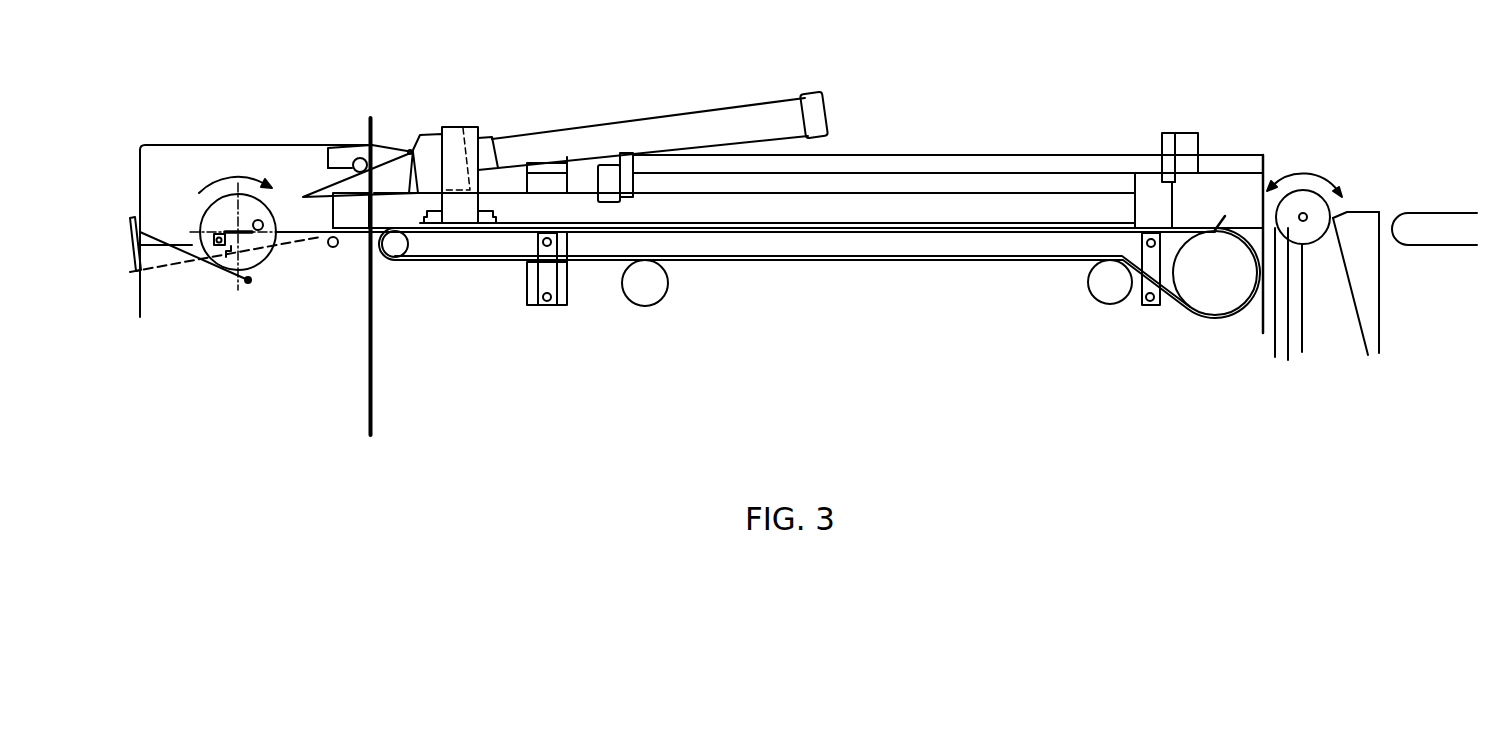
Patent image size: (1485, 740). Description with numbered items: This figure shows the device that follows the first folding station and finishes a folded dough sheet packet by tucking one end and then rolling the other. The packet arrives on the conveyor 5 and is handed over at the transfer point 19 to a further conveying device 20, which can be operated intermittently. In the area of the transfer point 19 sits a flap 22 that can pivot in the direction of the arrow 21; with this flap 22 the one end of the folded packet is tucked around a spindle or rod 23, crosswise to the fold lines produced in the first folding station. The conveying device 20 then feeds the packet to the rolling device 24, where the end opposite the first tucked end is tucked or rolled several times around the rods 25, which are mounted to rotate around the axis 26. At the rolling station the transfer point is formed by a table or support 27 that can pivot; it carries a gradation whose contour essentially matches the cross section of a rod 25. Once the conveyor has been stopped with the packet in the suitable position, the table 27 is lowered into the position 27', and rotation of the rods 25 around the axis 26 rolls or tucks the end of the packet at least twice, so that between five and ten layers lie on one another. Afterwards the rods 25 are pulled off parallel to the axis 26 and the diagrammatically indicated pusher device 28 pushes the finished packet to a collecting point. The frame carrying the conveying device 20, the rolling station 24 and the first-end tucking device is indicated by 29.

The conveyor 5 is at (1428, 226).
The transfer point 19 is at (1360, 186).
The conveying device 20 is at (1259, 292).
The arrow 21 is at (1302, 173).
The flap 22 is at (1368, 355).
The spindle or rod 23 is at (1305, 222).
The rolling device 24 is at (258, 138).
The rods 25 is at (217, 234).
The axis 26 is at (237, 230).
The table or support 27 is at (350, 136).
The lowered position of table 27' is at (226, 287).
The pusher device 28 is at (518, 158).
The frame 29 is at (1027, 165).